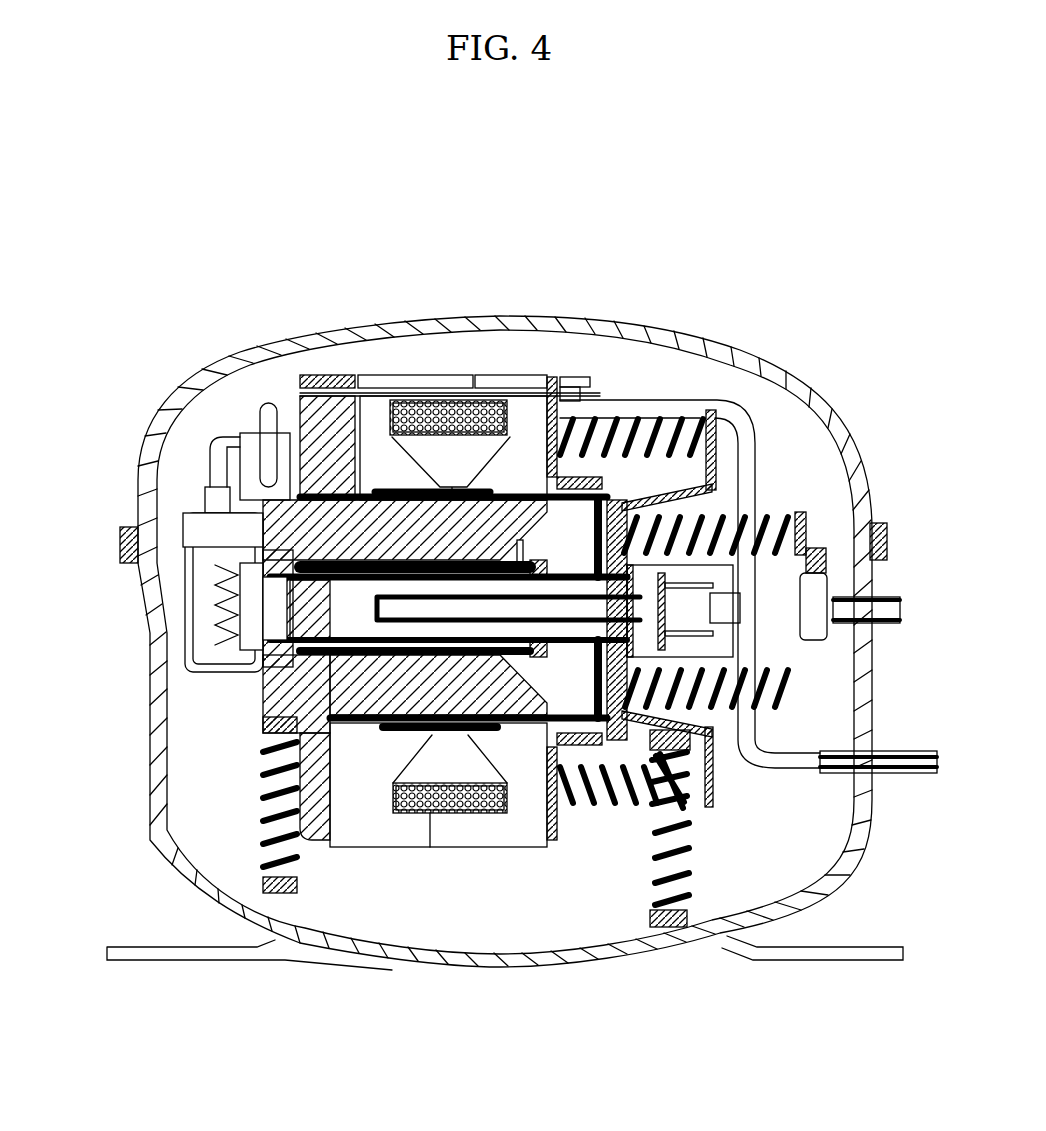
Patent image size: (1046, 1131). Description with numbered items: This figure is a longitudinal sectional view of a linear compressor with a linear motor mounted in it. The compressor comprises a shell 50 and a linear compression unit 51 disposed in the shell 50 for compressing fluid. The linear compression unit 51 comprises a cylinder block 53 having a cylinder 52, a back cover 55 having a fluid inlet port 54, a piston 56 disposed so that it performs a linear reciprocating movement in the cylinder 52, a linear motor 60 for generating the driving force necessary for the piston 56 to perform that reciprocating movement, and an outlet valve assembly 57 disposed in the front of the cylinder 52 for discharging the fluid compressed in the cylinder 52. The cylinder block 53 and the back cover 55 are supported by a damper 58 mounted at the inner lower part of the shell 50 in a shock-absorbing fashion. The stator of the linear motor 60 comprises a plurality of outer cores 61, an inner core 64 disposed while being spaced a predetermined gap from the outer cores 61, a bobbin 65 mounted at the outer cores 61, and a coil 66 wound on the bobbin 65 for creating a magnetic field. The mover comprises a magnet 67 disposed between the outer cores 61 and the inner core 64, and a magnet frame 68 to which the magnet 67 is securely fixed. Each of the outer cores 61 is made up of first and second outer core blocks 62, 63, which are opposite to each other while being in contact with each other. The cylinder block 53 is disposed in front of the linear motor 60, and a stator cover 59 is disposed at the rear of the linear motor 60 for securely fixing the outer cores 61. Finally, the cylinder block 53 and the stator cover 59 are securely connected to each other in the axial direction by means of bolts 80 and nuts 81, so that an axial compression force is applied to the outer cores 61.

The shell 50 is at (150, 425).
The linear compression unit 51 is at (223, 423).
The cylinder 52 is at (318, 550).
The cylinder block 53 is at (352, 556).
The fluid inlet port 54 is at (795, 608).
The back cover 55 is at (800, 527).
The piston 56 is at (272, 690).
The outlet valve assembly 57 is at (185, 603).
The damper 58 is at (248, 832).
The stator cover 59 is at (583, 403).
The linear motor 60 is at (462, 514).
The outer cores 61 is at (440, 535).
The first outer core block 62 is at (447, 358).
The second outer core block 63 is at (482, 356).
The inner core 64 is at (352, 440).
The bobbin 65 is at (452, 470).
The coil 66 is at (398, 410).
The magnet 67 is at (552, 430).
The magnet frame 68 is at (590, 494).
The bolts 80 is at (587, 397).
The nuts 81 is at (597, 380).